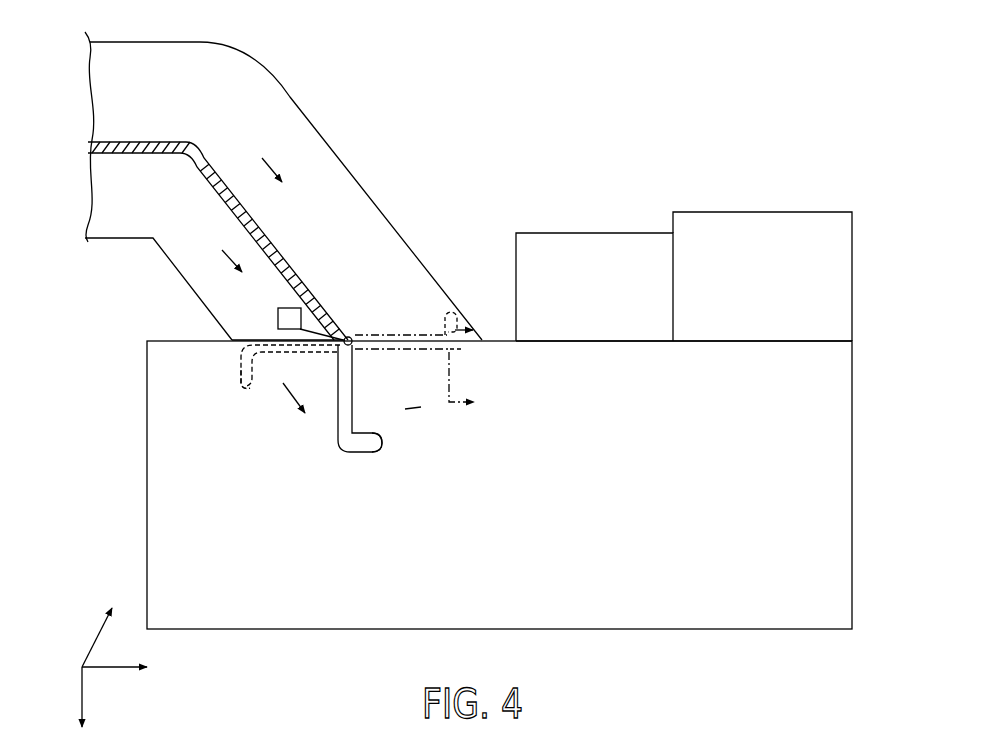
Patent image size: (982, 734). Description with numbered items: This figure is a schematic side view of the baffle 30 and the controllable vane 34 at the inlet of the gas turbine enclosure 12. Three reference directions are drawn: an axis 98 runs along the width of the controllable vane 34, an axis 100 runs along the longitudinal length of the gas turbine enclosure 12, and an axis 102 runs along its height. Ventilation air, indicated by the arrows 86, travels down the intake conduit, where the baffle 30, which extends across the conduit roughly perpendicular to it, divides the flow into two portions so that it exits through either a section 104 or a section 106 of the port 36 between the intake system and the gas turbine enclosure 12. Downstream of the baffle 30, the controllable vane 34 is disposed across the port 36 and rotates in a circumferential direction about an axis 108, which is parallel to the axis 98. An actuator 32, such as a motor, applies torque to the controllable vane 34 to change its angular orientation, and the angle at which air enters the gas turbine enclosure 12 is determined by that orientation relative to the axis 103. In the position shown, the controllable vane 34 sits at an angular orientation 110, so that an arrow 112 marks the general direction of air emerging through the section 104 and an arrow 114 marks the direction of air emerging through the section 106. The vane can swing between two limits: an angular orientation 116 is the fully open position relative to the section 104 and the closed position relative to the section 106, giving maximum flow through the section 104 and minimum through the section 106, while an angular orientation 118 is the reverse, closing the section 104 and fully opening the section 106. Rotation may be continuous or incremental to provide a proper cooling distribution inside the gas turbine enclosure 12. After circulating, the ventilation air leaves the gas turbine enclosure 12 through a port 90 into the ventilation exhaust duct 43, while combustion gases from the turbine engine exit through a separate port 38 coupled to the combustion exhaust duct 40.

The gas turbine enclosure 12 is at (663, 630).
The baffle 30 is at (214, 180).
The actuator 32 is at (278, 312).
The controllable vane 34 is at (366, 453).
The port 36 is at (238, 355).
The port 38 is at (770, 342).
The combustion exhaust duct 40 is at (765, 212).
The ventilation exhaust duct 43 is at (596, 233).
The arrows 86 is at (272, 170).
The port 90 is at (605, 342).
The axis 98 is at (93, 640).
The axis 100 is at (108, 666).
The axis 102 is at (83, 695).
The axis 103 is at (376, 180).
The section 104 is at (474, 347).
The section 106 is at (240, 347).
The axis 108 is at (354, 336).
The angular orientation 110 is at (340, 448).
The arrow 112 is at (420, 407).
The arrow 114 is at (293, 402).
The angular orientation 116 is at (240, 373).
The angular orientation 118 is at (386, 356).